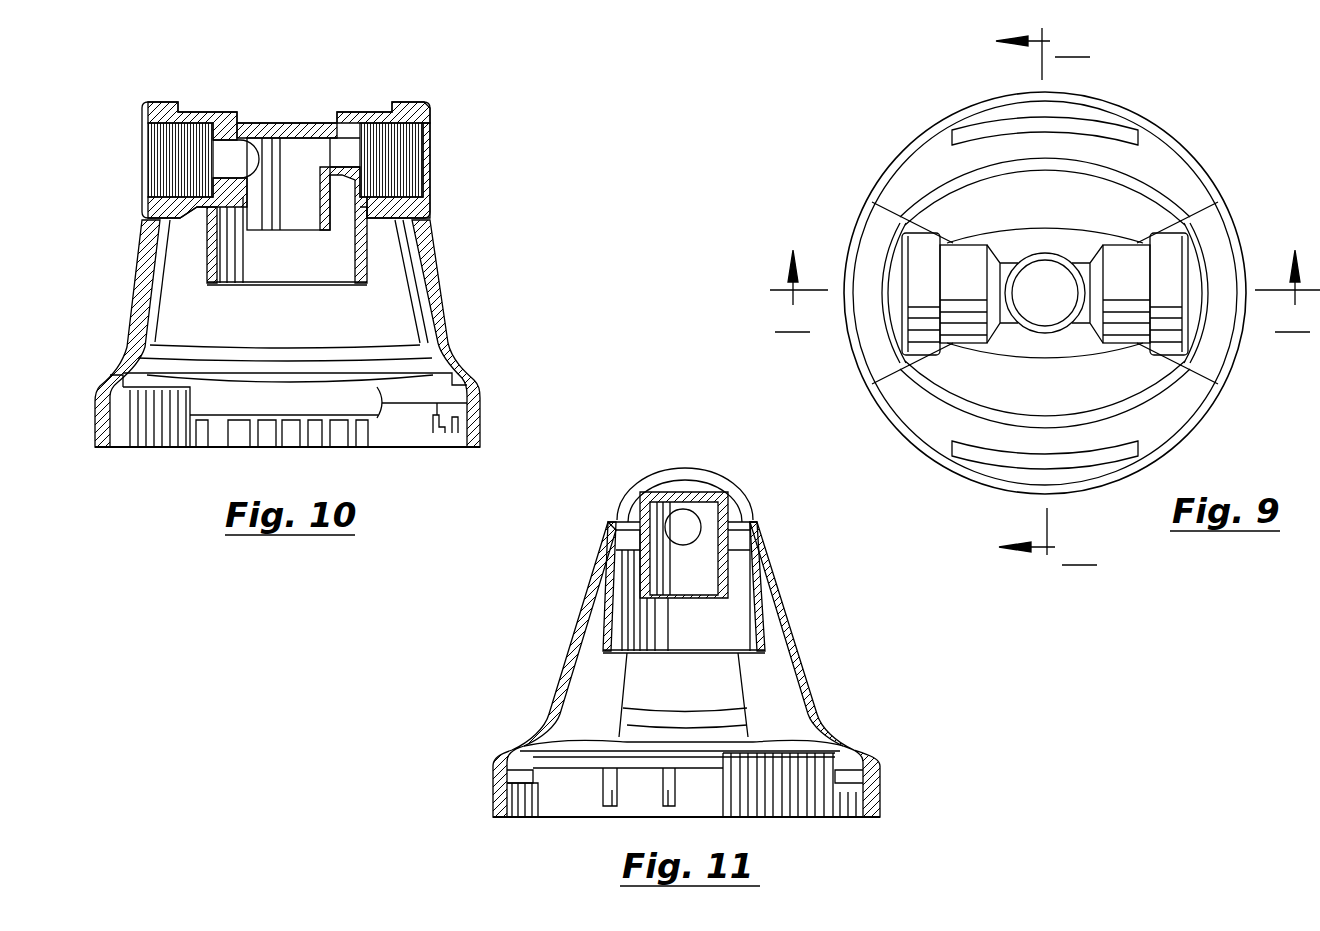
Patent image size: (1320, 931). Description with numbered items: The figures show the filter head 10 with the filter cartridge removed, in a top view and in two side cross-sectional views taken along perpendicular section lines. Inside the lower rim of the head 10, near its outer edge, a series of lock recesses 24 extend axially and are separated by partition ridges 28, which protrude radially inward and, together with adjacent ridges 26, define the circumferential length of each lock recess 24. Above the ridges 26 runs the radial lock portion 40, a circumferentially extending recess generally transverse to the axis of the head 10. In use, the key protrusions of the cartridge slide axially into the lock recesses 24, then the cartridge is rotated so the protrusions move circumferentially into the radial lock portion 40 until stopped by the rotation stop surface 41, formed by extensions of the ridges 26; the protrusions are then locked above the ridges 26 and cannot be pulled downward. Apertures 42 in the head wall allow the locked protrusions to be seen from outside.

In FIG. 10, the head 10 is at (122, 205).
In FIG. 9, the head 10 is at (868, 148).
In FIG. 11, the head 10 is at (566, 593).
In FIG. 10, the lock recesses 24 is at (448, 430).
In FIG. 10, the ridges 26 is at (277, 433).
In FIG. 11, the ridges 26 is at (537, 812).
In FIG. 10, the partition ridges 28 is at (458, 427).
In FIG. 11, the partition ridges 28 is at (668, 800).
In FIG. 10, the radial lock portion 40 is at (305, 402).
In FIG. 11, the radial lock portion 40 is at (518, 763).
In FIG. 10, the rotation stop surface 41 is at (192, 405).
In FIG. 11, the rotation stop surface 41 is at (840, 763).
In FIG. 9, the apertures 42 is at (1068, 113).